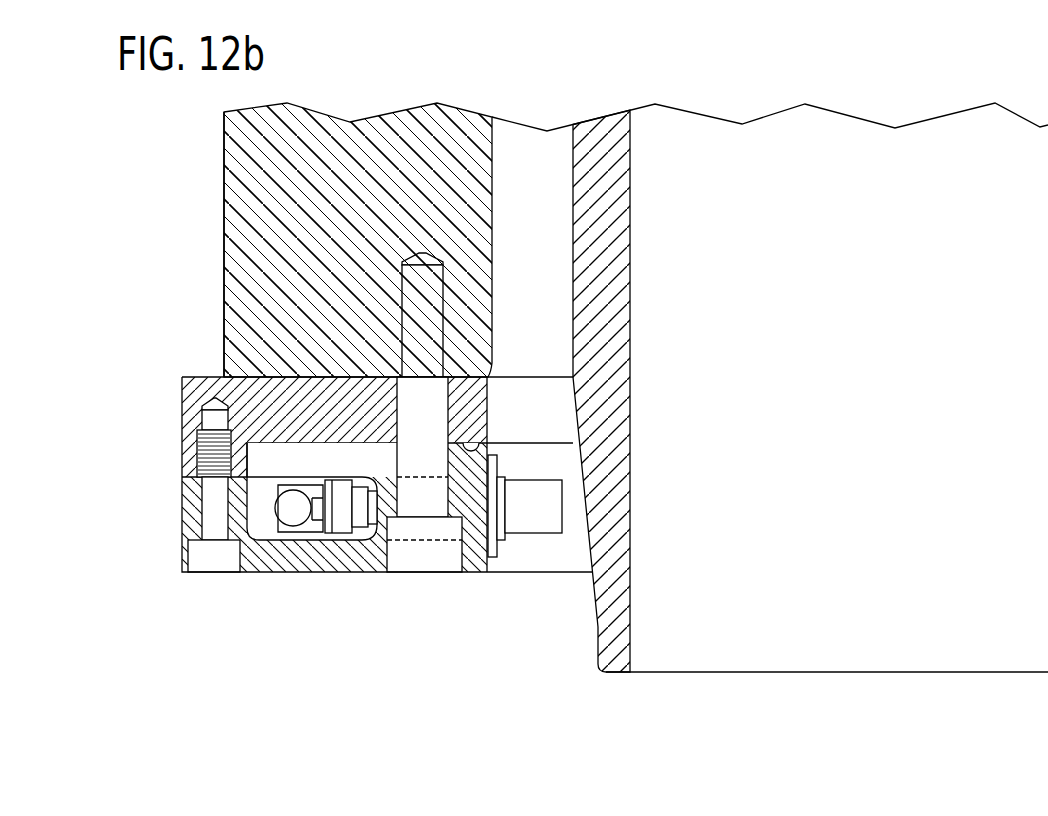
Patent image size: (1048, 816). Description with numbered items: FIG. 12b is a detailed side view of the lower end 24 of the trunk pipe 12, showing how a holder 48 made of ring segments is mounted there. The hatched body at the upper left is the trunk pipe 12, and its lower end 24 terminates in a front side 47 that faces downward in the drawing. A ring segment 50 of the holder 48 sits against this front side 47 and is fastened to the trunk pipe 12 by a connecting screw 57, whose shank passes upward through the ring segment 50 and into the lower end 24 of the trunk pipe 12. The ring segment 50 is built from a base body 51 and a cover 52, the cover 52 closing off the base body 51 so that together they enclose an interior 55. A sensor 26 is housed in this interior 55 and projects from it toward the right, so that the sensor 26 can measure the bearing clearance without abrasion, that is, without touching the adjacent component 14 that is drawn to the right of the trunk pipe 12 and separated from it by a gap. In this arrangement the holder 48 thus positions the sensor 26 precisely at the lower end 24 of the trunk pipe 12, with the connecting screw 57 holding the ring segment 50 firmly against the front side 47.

The trunk pipe 12 is at (224, 150).
The second housing part 14 is at (850, 662).
The lower end 24 is at (212, 233).
The sensor 26 is at (535, 522).
The front side 47 is at (277, 378).
The holder 48 is at (262, 574).
The ring segment 50 is at (335, 574).
The base body 51 is at (190, 502).
The cover 52 is at (190, 397).
The interior 55 is at (289, 451).
The connecting screw 57 is at (425, 562).